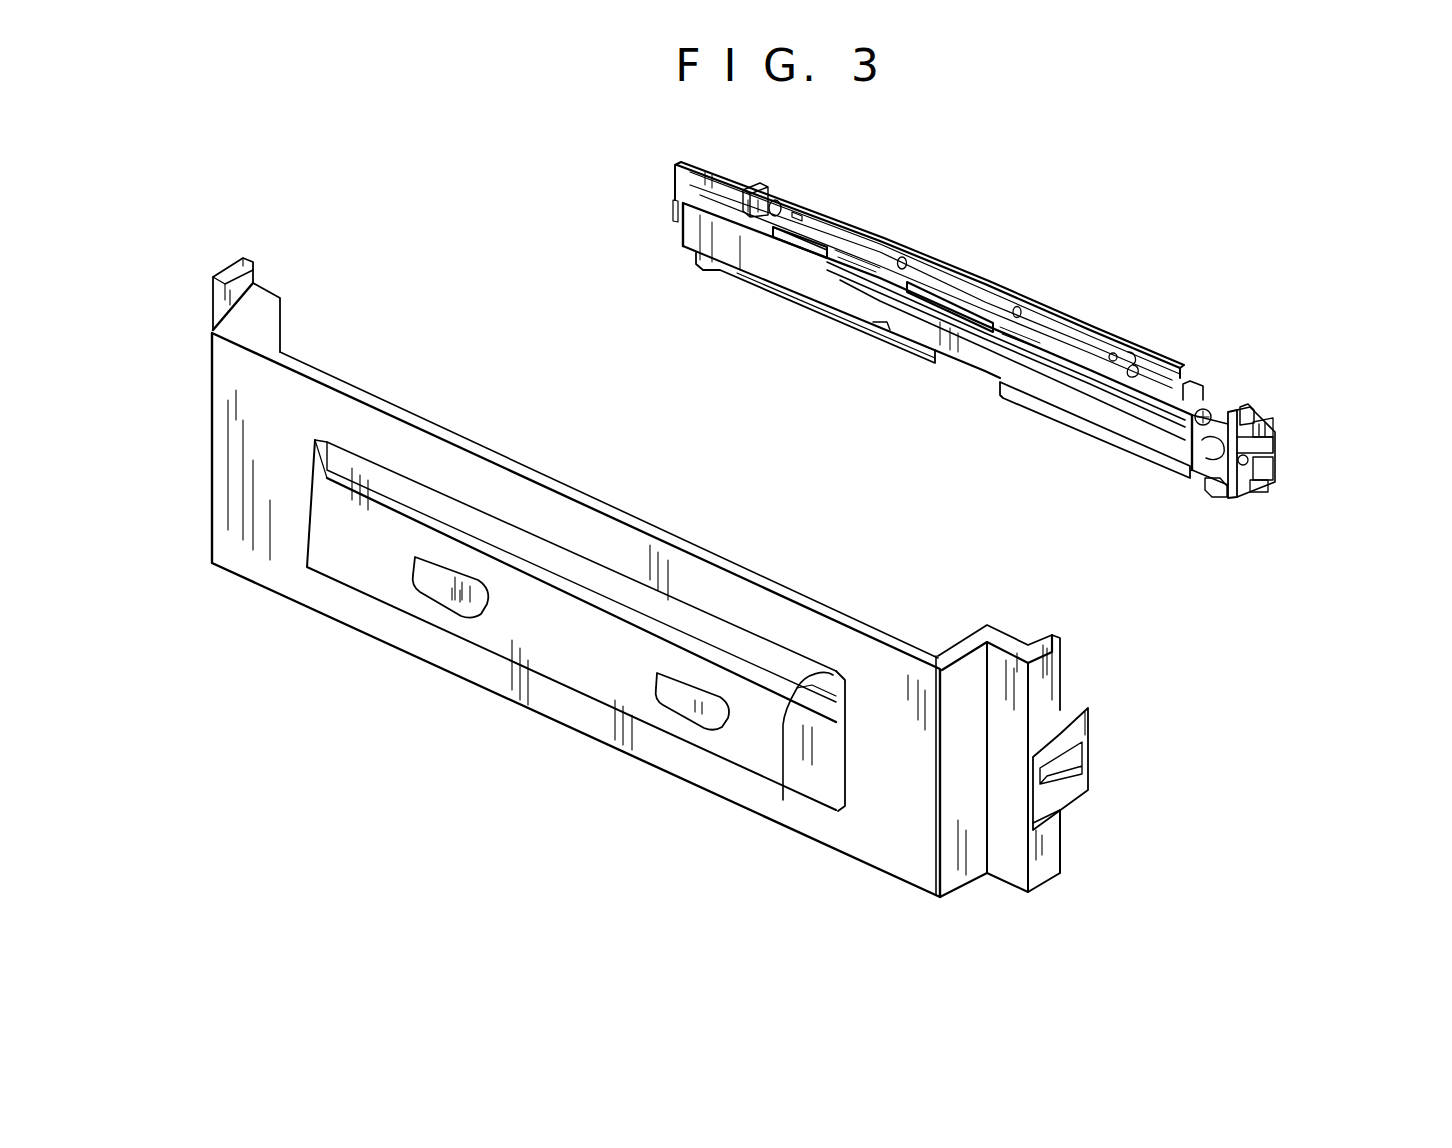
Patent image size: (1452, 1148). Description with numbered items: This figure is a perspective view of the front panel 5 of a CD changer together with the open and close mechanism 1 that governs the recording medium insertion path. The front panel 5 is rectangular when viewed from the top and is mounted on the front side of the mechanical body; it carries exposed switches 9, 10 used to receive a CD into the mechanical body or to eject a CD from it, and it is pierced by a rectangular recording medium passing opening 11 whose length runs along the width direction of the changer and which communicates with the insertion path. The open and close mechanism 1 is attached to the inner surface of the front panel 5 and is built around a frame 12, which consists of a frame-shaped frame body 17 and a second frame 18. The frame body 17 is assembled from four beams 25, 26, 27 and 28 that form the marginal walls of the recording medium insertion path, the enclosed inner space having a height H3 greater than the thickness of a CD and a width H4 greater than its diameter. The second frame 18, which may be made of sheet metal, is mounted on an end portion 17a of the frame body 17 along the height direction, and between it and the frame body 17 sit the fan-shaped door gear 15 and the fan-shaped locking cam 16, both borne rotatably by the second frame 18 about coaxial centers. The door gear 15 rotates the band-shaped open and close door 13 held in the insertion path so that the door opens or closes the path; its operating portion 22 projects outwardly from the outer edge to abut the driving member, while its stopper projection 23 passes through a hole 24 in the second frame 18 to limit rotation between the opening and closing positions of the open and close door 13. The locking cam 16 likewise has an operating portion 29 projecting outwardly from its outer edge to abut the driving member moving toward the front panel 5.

The open and close mechanism 1 is at (1032, 262).
The front panel 5 is at (708, 797).
The switch 9 is at (449, 592).
The switch 10 is at (688, 699).
The recording medium passing opening 11 is at (795, 690).
The frame 12 is at (1080, 318).
The open and close door 13 is at (1040, 402).
The door gear 15 is at (1280, 430).
The locking cam 16 is at (1267, 407).
The frame body 17 is at (948, 260).
The end portion 17a is at (1212, 410).
The second frame 18 is at (1273, 450).
The operating portion 22 is at (1260, 416).
The stopper projection 23 is at (1267, 467).
The hole 24 is at (1257, 485).
The beam 25 is at (872, 328).
The beam 26 is at (870, 263).
The beam 27 is at (678, 200).
The beam 28 is at (1207, 470).
The operating portion 29 is at (1247, 412).
The height H3 is at (678, 234).
The width H4 is at (684, 248).